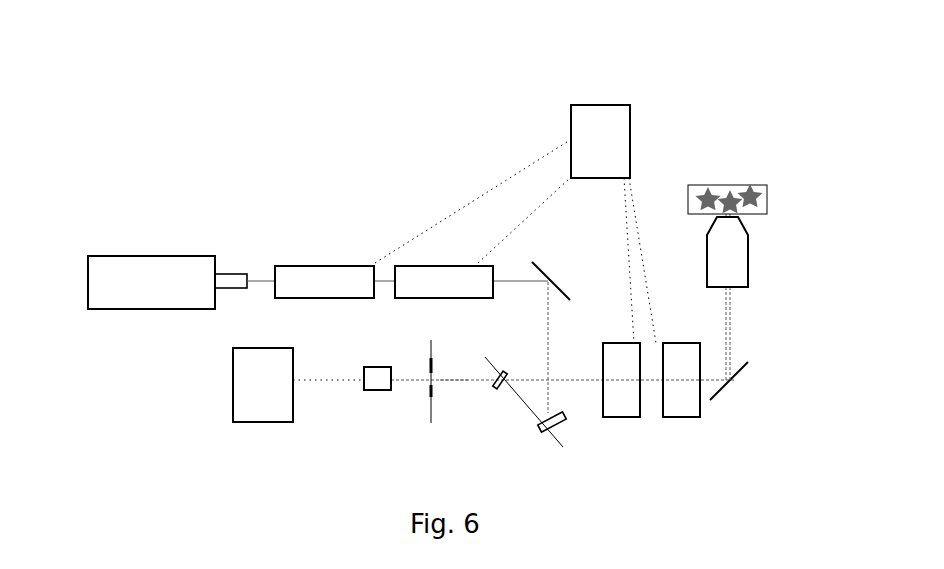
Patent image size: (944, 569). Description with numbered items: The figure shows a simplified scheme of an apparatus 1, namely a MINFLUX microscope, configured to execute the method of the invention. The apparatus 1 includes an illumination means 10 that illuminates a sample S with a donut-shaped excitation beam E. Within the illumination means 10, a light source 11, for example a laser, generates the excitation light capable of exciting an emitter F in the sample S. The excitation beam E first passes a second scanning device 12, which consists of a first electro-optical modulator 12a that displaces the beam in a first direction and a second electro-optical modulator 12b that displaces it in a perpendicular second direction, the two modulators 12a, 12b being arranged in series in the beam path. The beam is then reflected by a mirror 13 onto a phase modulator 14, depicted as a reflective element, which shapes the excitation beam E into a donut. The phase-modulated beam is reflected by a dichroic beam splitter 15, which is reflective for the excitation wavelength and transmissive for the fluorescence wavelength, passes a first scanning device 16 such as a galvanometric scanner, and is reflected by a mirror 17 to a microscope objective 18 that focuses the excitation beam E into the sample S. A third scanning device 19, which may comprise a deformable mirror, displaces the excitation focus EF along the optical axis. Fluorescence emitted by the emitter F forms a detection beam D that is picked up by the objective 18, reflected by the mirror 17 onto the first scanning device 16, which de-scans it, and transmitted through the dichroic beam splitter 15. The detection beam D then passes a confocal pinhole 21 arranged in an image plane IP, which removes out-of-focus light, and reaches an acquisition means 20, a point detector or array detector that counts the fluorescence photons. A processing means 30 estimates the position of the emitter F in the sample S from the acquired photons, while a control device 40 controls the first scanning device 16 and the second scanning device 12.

The apparatus 1 is at (403, 80).
The illumination means 10 is at (337, 160).
The light source 11 is at (152, 256).
The second scanning device 12 is at (383, 215).
The first electro-optical modulator 12a is at (325, 266).
The second electro-optical modulator 12b is at (450, 266).
The mirror 13 is at (550, 282).
The phase modulator 14 is at (568, 444).
The dichroic beam splitter 15 is at (494, 360).
The first scanning device 16 is at (682, 417).
The mirror 17 is at (728, 382).
The microscope objective 18 is at (750, 258).
The third scanning device 19 is at (620, 417).
The acquisition means 20 is at (377, 390).
The pinhole 21 is at (431, 390).
The processing means 30 is at (265, 422).
The control device 40 is at (602, 105).
The detection beam D is at (453, 377).
The excitation beam E is at (728, 335).
The excitation focus EF is at (727, 208).
The emitter F is at (752, 195).
The image plane IP is at (431, 423).
The sample S is at (768, 207).